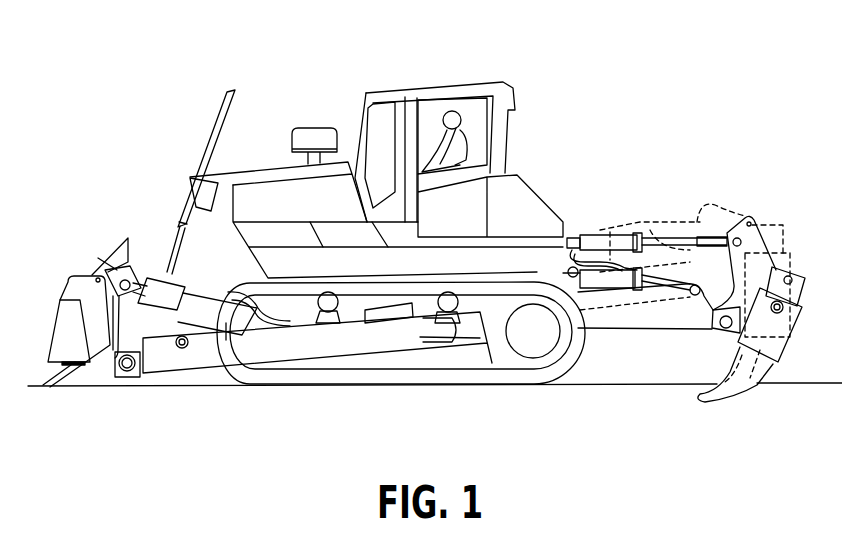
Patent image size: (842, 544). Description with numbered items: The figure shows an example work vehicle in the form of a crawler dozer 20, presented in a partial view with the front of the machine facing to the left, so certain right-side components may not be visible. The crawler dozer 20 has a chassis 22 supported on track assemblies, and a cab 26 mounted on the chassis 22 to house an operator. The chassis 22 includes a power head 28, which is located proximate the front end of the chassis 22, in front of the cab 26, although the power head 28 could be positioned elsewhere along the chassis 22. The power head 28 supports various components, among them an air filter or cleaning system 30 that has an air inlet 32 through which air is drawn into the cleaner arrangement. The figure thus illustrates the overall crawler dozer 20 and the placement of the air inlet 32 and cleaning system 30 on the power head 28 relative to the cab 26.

The crawler dozer 20 is at (658, 77).
The chassis 22 is at (532, 180).
The cab 26 is at (417, 80).
The power head 28 is at (253, 192).
The air filter or cleaning system 30 is at (340, 140).
The air inlet 32 is at (312, 126).